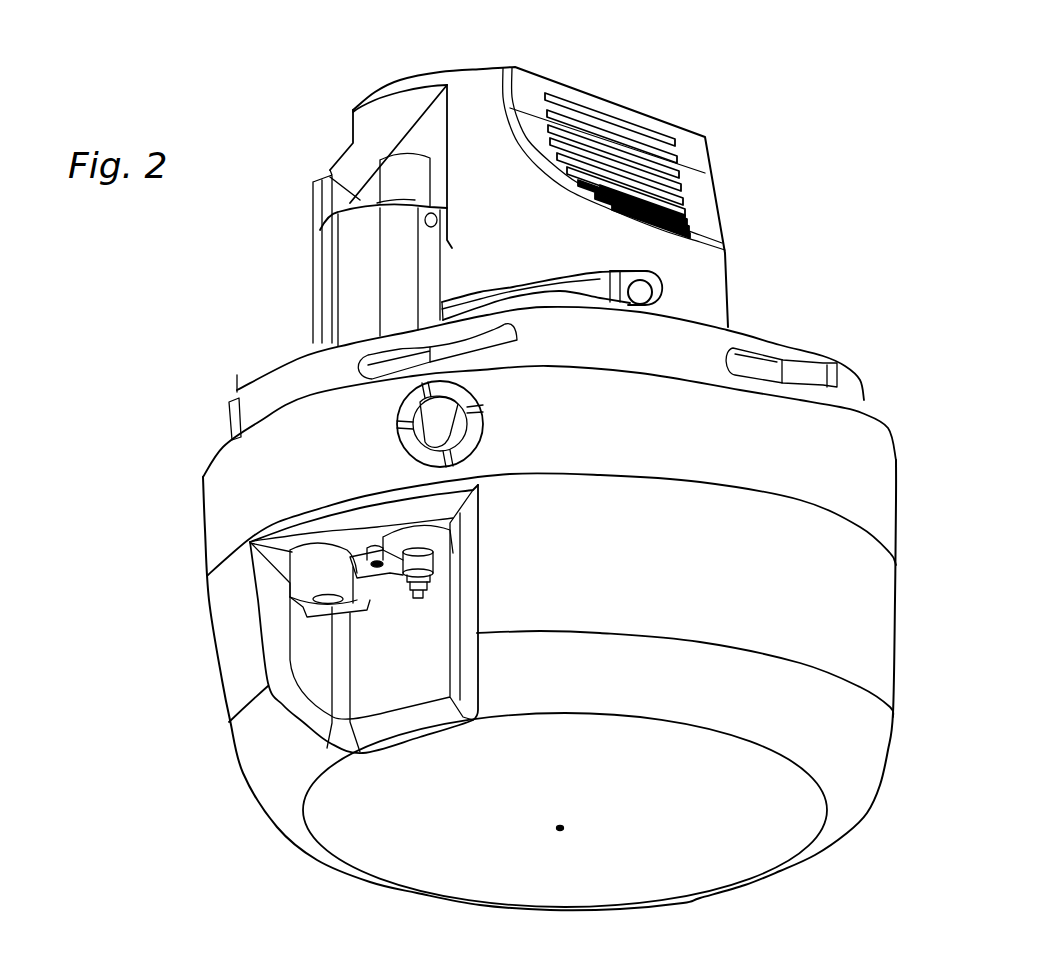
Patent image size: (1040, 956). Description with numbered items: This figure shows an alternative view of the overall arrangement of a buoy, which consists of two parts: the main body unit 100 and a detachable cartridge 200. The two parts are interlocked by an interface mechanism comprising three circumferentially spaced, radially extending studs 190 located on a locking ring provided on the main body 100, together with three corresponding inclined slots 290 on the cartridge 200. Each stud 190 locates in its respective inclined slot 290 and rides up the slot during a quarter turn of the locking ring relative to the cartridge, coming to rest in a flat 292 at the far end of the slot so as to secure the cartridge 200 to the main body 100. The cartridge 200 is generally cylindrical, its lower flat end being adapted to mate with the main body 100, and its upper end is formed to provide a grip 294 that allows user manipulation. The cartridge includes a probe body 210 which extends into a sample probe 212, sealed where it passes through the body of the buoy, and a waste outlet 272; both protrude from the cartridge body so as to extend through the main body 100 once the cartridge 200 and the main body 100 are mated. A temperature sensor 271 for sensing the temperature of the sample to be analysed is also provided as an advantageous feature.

The main body unit 100 is at (905, 583).
The detachable cartridge 200 is at (552, 246).
The probe body 210 is at (343, 294).
The sample probe 212 is at (433, 567).
The temperature sensor 271 is at (380, 567).
The waste outlet 272 is at (428, 592).
The inclined slot 290 is at (533, 293).
The flat 292 is at (634, 306).
The grip 294 is at (673, 150).
The stud 190 is at (653, 289).